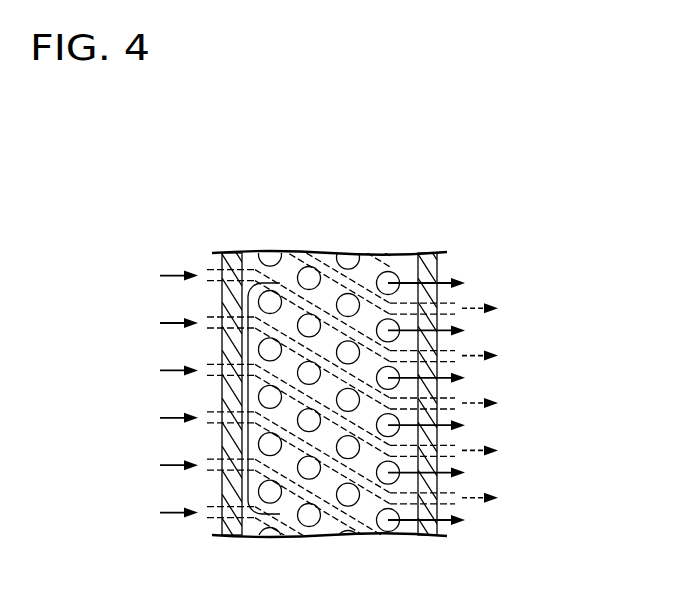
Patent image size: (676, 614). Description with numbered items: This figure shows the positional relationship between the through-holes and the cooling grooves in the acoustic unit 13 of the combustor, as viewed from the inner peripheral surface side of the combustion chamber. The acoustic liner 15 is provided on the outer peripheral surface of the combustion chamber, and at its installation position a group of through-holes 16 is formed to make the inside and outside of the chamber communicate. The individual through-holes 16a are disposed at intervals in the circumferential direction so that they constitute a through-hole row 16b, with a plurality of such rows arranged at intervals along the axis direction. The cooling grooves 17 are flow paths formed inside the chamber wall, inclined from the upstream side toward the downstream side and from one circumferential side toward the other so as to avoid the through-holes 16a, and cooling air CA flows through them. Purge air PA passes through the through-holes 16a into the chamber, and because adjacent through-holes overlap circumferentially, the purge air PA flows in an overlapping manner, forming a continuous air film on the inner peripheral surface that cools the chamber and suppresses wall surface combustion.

The acoustic unit 13 is at (426, 233).
The acoustic liner 15 is at (436, 527).
The group of through-holes 16 is at (297, 366).
The through-holes 16a is at (295, 299).
The through-hole row 16b is at (312, 181).
The cooling grooves 17 is at (436, 401).
The cooling air CA is at (165, 273).
The purge air PA is at (440, 524).